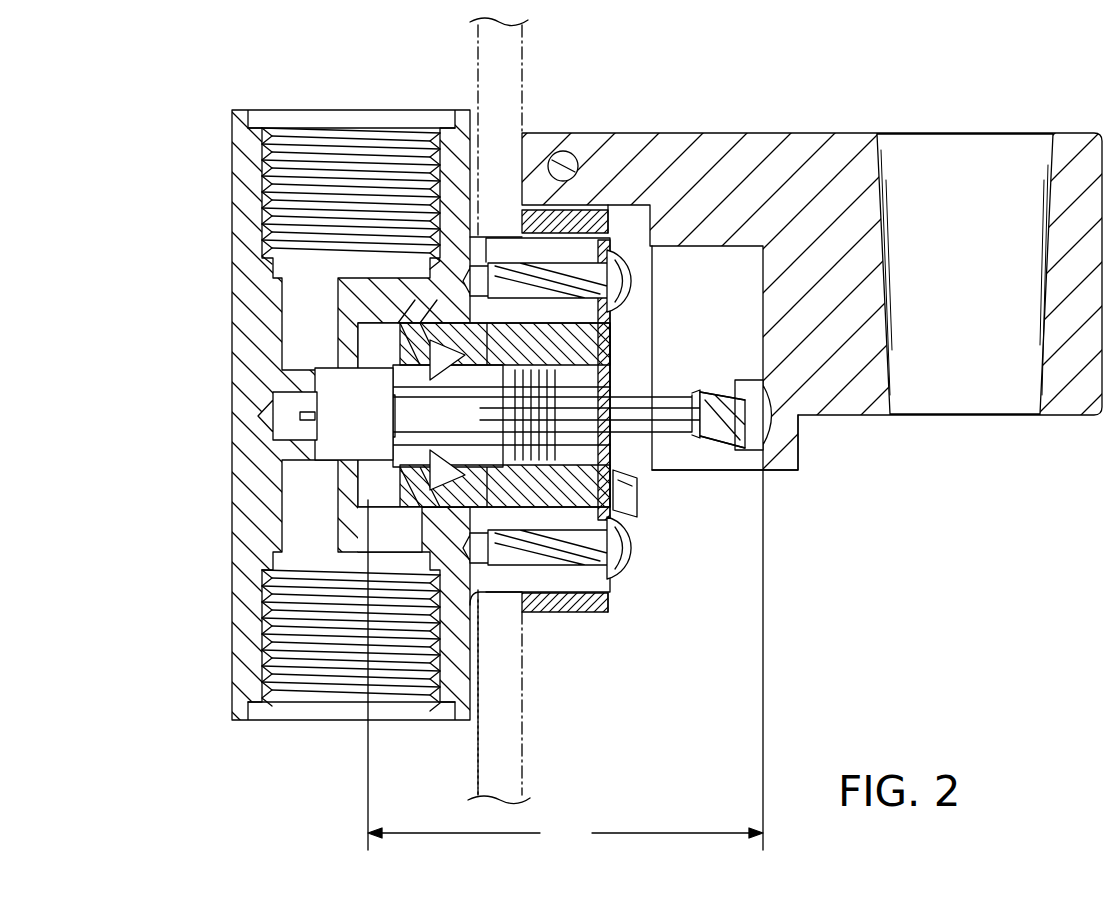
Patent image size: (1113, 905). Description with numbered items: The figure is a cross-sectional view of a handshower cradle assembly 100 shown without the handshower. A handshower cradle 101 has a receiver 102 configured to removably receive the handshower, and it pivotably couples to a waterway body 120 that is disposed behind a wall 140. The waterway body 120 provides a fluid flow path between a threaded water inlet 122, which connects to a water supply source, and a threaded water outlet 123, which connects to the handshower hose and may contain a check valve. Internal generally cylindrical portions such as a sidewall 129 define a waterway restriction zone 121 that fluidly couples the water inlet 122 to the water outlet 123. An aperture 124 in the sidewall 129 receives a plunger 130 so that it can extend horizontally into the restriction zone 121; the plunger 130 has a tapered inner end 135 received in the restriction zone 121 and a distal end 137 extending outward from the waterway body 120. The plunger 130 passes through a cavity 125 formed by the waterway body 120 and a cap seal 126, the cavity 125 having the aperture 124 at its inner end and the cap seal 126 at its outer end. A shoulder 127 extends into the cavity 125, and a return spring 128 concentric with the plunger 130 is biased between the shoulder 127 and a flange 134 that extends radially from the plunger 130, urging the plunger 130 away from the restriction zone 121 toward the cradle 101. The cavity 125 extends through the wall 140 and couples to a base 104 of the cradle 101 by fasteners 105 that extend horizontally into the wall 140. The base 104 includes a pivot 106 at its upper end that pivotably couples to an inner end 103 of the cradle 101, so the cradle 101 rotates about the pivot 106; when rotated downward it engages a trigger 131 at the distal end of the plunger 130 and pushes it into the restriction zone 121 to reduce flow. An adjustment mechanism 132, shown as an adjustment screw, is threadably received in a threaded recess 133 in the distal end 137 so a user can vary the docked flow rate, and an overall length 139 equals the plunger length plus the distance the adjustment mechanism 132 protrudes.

The handshower cradle assembly 100 is at (157, 130).
The handshower cradle 101 is at (837, 377).
The receiver 102 is at (880, 157).
The inner end 103 is at (653, 458).
The base 104 is at (593, 197).
The fasteners 105 is at (622, 255).
The pivot 106 is at (583, 227).
The waterway body 120 is at (262, 342).
The waterway restriction zone 121 is at (308, 424).
The water inlet 122 is at (333, 705).
The water outlet 123 is at (318, 122).
The aperture 124 is at (374, 398).
The cavity 125 is at (614, 370).
The cap seal 126 is at (630, 500).
The shoulder 127 is at (490, 232).
The return spring 128 is at (530, 415).
The sidewall 129 is at (353, 477).
The plunger 130 is at (430, 332).
The trigger 131 is at (714, 383).
The adjustment mechanism 132 is at (706, 412).
The threaded recess 133 is at (633, 385).
The flange 134 is at (607, 296).
The inner end 135 is at (358, 414).
The distal end 137 is at (708, 387).
The overall length 139 is at (565, 660).
The wall 140 is at (496, 754).